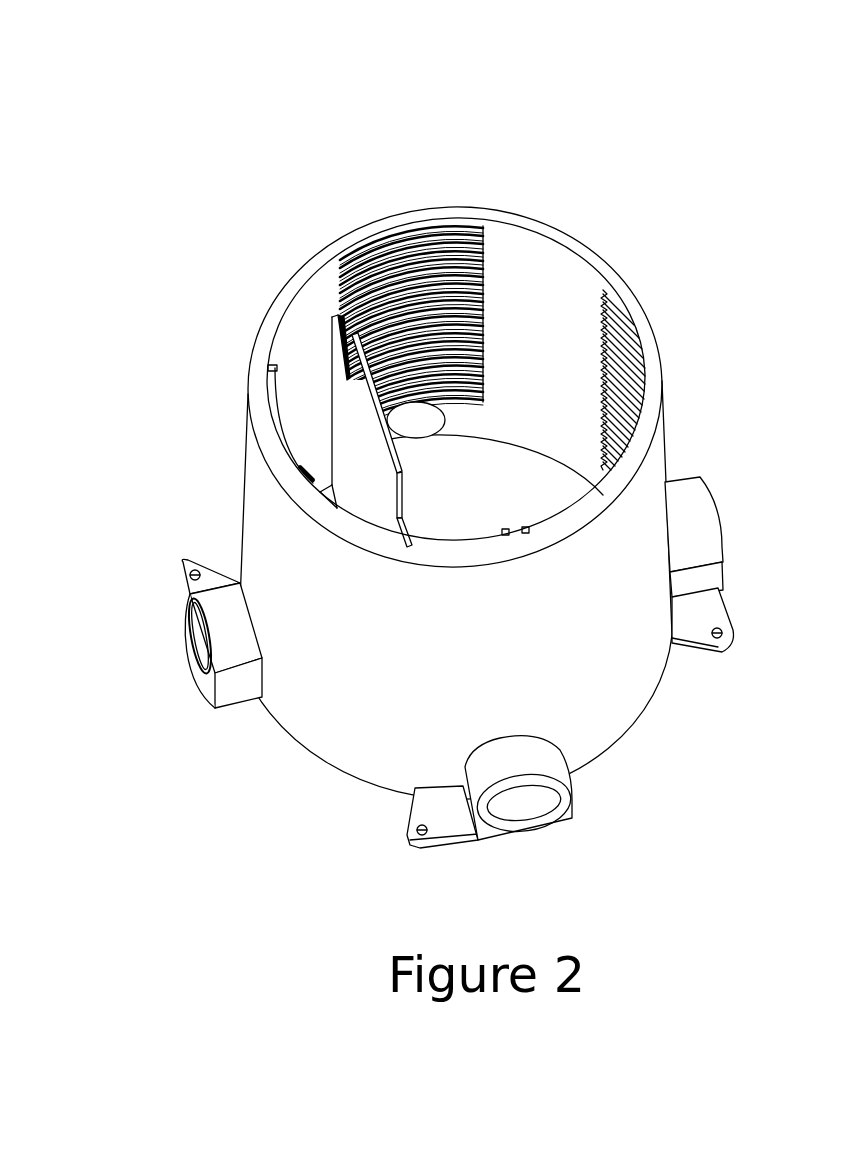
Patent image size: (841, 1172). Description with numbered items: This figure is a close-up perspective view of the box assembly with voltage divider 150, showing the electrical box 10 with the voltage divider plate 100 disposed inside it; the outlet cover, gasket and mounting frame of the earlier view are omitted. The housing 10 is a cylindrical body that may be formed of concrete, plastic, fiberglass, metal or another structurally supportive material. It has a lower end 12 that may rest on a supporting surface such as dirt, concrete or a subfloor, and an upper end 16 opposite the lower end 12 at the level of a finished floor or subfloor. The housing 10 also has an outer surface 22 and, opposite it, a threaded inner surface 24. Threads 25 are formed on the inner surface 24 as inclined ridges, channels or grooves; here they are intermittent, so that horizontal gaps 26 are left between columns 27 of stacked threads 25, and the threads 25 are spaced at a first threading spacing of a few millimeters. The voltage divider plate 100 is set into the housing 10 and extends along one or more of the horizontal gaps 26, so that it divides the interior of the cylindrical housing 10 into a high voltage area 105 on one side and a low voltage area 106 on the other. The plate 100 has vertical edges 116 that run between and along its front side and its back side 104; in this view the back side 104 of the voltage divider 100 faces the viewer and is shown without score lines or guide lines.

The electrical box 10 is at (165, 368).
The lower end 12 is at (608, 748).
The upper end 16 is at (663, 402).
The outer surface 22 is at (454, 659).
The threaded inner surface 24 is at (562, 377).
The threads 25 is at (612, 295).
The horizontal gaps 26 is at (611, 258).
The columns 27 is at (486, 204).
The voltage divider plate 100 is at (347, 397).
The back side 104 is at (383, 483).
The high voltage area 105 is at (368, 501).
The low voltage area 106 is at (558, 496).
The vertical edges 116 is at (332, 345).
The box assembly with voltage divider 150 is at (80, 86).